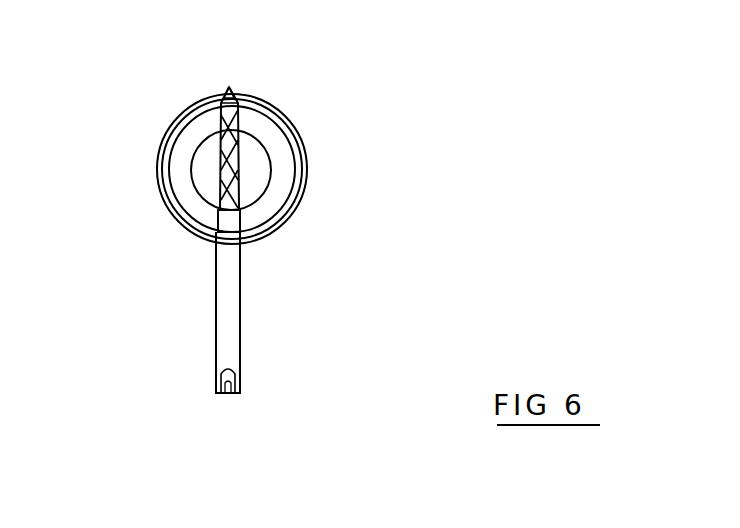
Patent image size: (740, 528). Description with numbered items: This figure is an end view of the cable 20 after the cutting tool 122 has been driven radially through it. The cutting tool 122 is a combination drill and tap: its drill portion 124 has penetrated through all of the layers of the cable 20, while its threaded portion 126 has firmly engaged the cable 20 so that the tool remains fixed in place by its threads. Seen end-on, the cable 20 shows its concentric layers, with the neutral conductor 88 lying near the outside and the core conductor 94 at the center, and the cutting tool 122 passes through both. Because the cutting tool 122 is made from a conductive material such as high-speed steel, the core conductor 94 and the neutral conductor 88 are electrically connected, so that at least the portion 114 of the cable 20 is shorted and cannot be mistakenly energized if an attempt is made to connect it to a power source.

The cable 20 is at (388, 84).
The neutral conductor 88 is at (174, 218).
The core conductor 94 is at (287, 220).
The portion of the cable 114 is at (199, 168).
The cutting tool 122 is at (267, 312).
The drill portion 124 is at (231, 90).
The threaded portion 126 is at (293, 159).